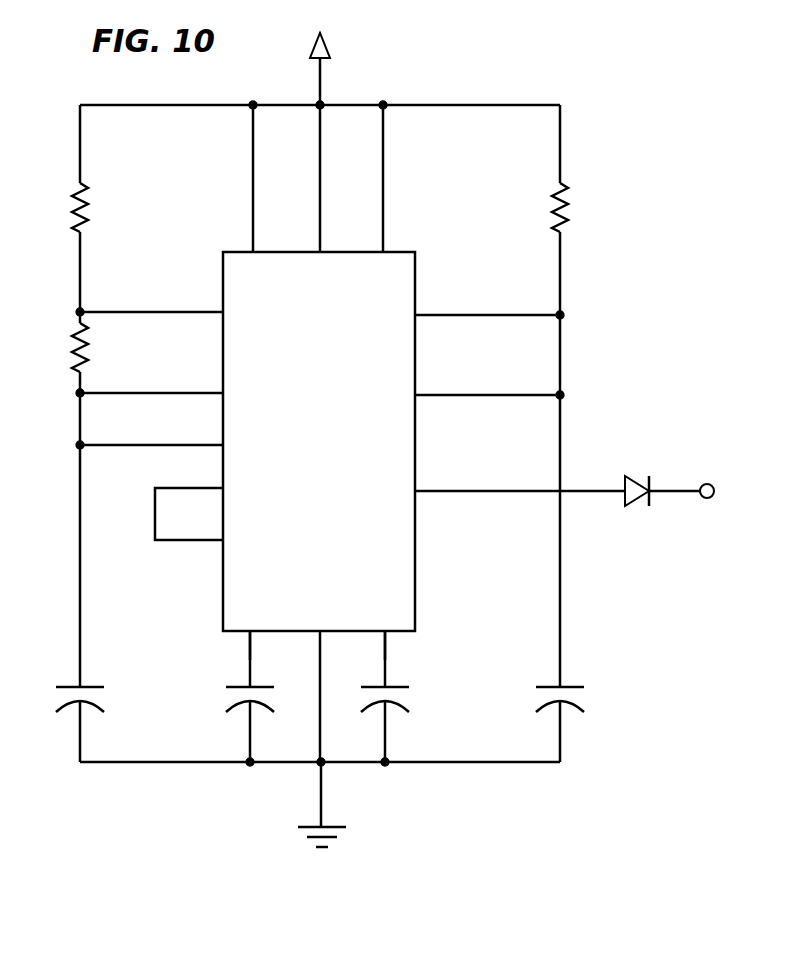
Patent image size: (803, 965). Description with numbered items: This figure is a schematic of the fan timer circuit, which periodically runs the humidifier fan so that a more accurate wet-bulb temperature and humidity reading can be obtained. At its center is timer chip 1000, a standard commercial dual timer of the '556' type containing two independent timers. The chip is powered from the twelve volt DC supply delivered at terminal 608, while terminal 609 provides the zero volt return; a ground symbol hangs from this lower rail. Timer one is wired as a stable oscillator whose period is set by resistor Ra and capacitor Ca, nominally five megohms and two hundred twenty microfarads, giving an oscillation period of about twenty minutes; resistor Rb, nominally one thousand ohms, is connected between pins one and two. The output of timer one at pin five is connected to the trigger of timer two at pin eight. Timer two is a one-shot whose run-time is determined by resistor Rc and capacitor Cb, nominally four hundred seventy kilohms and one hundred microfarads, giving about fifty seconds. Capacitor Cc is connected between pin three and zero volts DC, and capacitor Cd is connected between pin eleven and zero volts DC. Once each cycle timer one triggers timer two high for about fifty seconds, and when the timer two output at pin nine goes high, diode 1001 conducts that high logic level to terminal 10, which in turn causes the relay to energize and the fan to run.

The terminal 608 is at (318, 103).
The terminal 609 is at (319, 790).
The timer chip 1000 is at (415, 425).
The diode 1001 is at (632, 474).
The terminal 10 is at (708, 483).
The resistor Ra is at (88, 186).
The resistor Rb is at (88, 345).
The resistor Rc is at (553, 186).
The capacitor Ca is at (68, 684).
The capacitor Cb is at (575, 686).
The capacitor Cc is at (232, 689).
The capacitor Cd is at (400, 689).